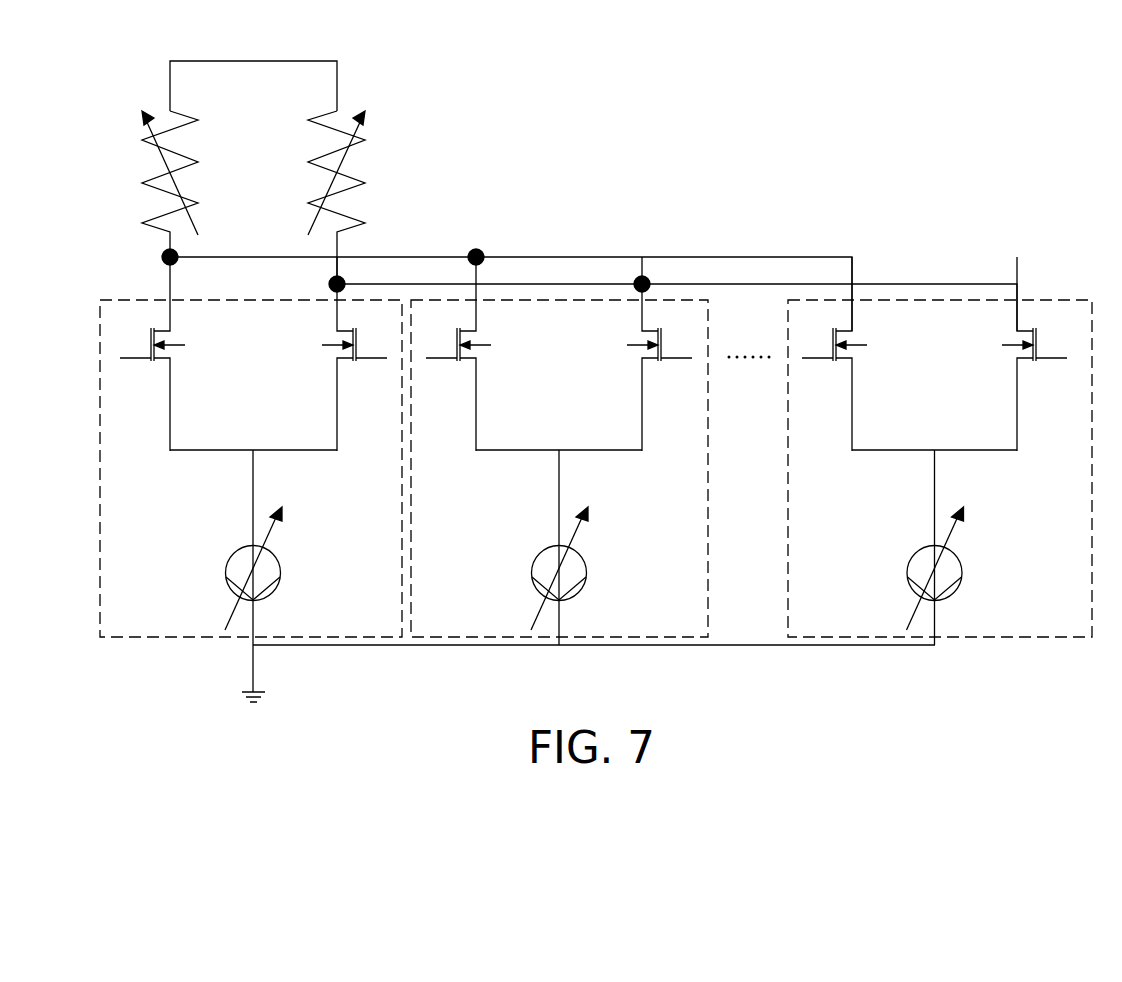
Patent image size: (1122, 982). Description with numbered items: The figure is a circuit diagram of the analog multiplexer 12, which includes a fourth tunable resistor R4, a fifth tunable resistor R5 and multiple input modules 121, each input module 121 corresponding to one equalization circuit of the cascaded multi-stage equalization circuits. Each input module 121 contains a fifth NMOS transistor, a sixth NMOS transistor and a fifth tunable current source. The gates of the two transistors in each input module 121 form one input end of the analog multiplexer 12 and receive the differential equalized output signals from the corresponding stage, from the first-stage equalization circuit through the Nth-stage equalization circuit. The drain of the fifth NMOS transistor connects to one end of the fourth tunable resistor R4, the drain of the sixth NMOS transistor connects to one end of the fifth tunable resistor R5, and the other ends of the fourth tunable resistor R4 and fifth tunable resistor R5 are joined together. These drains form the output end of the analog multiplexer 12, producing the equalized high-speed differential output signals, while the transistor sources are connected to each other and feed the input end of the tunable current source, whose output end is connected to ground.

The analog multiplexer 12 is at (595, 102).
The input module 121 is at (380, 300).
The fourth tunable resistor R4 is at (154, 184).
The fifth tunable resistor R5 is at (357, 197).